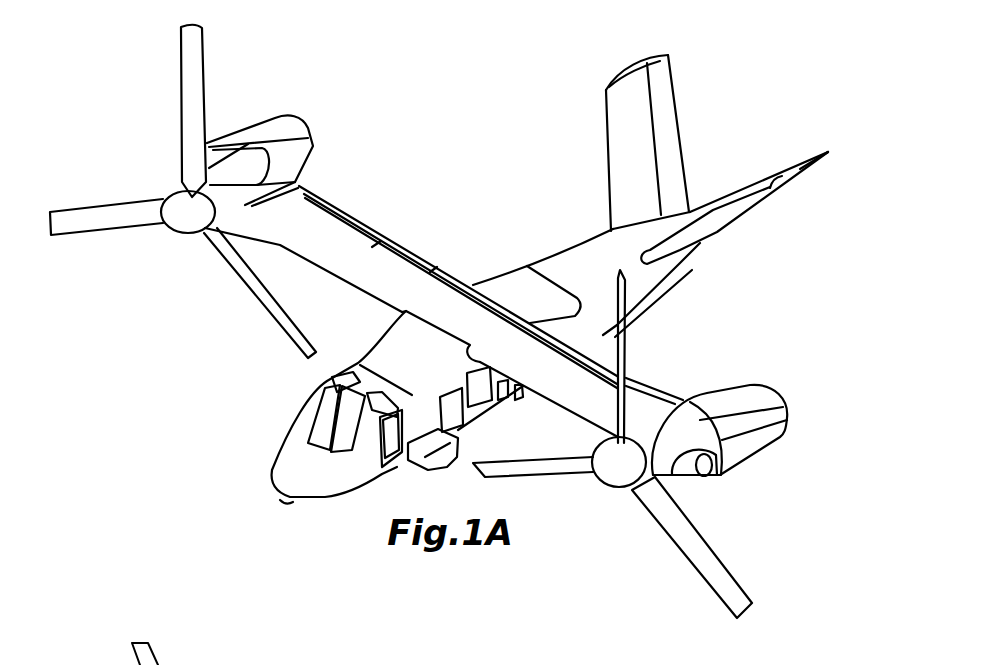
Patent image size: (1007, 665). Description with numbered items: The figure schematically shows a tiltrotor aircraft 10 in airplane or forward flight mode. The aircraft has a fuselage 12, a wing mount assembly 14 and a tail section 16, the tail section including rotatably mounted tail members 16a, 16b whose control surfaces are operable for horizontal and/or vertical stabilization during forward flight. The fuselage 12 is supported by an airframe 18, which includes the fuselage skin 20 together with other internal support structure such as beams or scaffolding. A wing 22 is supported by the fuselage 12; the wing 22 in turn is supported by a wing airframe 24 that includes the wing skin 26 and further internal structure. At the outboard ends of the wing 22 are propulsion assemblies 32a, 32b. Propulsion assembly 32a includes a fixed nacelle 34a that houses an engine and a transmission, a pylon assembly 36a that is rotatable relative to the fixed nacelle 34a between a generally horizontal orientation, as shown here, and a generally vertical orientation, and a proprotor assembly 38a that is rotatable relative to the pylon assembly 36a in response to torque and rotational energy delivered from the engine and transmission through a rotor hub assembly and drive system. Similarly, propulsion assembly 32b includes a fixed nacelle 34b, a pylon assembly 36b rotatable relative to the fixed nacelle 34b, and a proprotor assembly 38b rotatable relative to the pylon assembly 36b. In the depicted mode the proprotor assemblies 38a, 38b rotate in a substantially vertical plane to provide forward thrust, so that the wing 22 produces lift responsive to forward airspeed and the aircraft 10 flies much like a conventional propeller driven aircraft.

The tiltrotor aircraft 10 is at (475, 149).
The fuselage 12 is at (357, 490).
The wing mount assembly 14 is at (498, 287).
The tail section 16 is at (686, 126).
The tail member 16a is at (810, 150).
The tail member 16b is at (665, 68).
The airframe 18 is at (546, 250).
The fuselage skin 20 is at (592, 258).
The wing 22 is at (421, 282).
The wing airframe 24 is at (336, 240).
The wing skin 26 is at (548, 388).
The propulsion assembly 32a is at (707, 397).
The propulsion assembly 32b is at (259, 131).
The fixed nacelle 34a is at (733, 388).
The fixed nacelle 34b is at (276, 118).
The pylon assembly 36a is at (648, 427).
The pylon assembly 36b is at (218, 180).
The proprotor assembly 38a is at (720, 572).
The proprotor assembly 38b is at (183, 75).